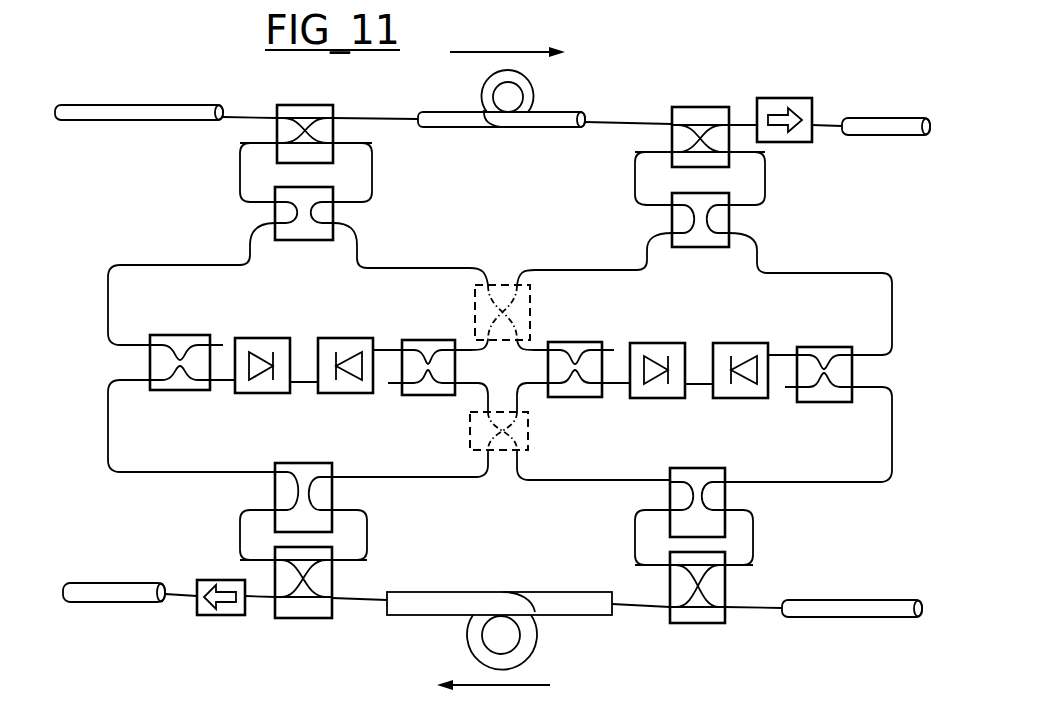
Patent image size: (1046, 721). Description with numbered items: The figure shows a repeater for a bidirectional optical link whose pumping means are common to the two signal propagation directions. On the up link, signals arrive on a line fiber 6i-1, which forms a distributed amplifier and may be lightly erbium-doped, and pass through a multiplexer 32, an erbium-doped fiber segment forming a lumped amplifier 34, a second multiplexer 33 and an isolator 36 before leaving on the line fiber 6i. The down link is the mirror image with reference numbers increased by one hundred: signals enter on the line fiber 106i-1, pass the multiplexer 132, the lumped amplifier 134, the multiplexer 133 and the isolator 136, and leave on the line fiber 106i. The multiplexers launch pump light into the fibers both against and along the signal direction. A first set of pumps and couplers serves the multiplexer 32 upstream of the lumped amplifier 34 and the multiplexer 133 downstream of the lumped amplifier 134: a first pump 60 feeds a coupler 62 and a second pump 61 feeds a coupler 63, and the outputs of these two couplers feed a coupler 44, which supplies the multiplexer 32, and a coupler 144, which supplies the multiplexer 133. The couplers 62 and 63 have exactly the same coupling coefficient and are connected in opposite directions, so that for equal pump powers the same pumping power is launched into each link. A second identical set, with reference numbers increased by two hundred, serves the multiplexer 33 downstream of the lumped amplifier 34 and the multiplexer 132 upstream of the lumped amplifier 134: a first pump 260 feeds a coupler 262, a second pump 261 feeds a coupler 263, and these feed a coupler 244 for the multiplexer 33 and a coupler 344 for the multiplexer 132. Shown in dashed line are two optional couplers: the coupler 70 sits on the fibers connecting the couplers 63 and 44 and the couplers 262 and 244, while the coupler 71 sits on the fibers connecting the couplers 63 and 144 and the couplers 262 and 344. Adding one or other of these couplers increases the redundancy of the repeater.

The line fiber 6i-1 is at (113, 112).
The multiplexer 32 is at (297, 105).
The lumped amplifier 34 is at (455, 112).
The multiplexer 33 is at (702, 107).
The isolator 36 is at (782, 98).
The line fiber 6i is at (878, 118).
The coupler 44 is at (333, 213).
The coupler 244 is at (672, 212).
The coupler 62 is at (175, 335).
The first pump 60 is at (258, 338).
The second pump 61 is at (348, 338).
The coupler 63 is at (428, 340).
The coupler 70 is at (530, 305).
The coupler 262 is at (580, 342).
The first pump 260 is at (660, 343).
The second pump 261 is at (745, 343).
The coupler 263 is at (823, 347).
The coupler 71 is at (528, 433).
The coupler 144 is at (300, 463).
The coupler 344 is at (700, 468).
The lumped amplifier 134 is at (482, 592).
The line fiber 106i is at (108, 602).
The isolator 136 is at (220, 615).
The multiplexer 133 is at (305, 618).
The multiplexer 132 is at (700, 623).
The line fiber 106i-1 is at (848, 617).